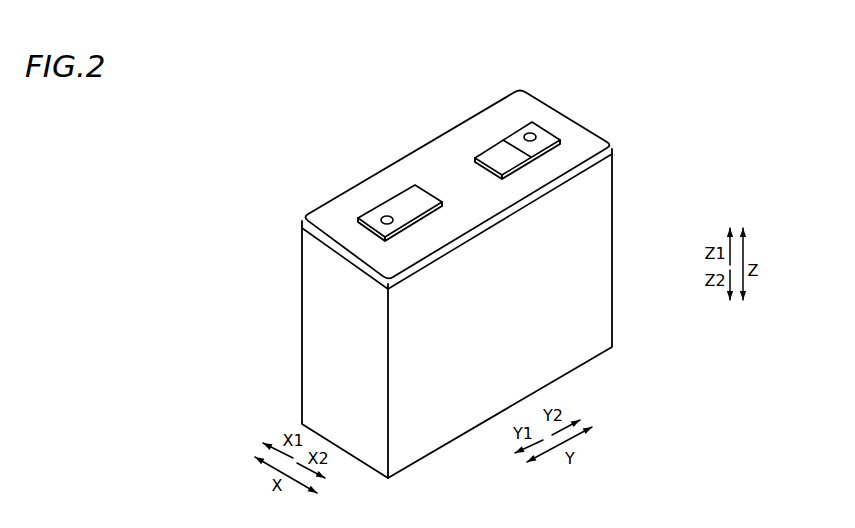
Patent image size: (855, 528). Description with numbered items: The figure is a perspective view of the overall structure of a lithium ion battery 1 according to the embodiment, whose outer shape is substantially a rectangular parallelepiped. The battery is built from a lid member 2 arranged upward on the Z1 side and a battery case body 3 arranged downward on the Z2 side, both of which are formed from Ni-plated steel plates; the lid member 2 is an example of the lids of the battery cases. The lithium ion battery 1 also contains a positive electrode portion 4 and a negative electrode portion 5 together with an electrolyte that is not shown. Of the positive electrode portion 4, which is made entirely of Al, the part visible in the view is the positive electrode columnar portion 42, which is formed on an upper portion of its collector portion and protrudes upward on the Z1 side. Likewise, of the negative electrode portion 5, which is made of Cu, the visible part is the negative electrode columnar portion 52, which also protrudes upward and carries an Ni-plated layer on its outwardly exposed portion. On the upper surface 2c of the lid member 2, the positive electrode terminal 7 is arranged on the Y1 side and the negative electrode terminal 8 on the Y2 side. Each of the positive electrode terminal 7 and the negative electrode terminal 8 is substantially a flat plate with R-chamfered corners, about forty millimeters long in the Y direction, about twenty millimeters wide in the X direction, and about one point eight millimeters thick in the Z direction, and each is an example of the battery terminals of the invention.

The lithium ion battery 1 is at (600, 82).
The lid member 2 is at (427, 271).
The upper surface 2c is at (440, 152).
The battery case body 3 is at (312, 345).
The positive electrode portion 4 is at (391, 164).
The positive electrode columnar portion 42 is at (384, 217).
The negative electrode portion 5 is at (516, 104).
The negative electrode columnar portion 52 is at (530, 133).
The positive electrode terminal 7 is at (403, 186).
The negative electrode terminal 8 is at (479, 142).